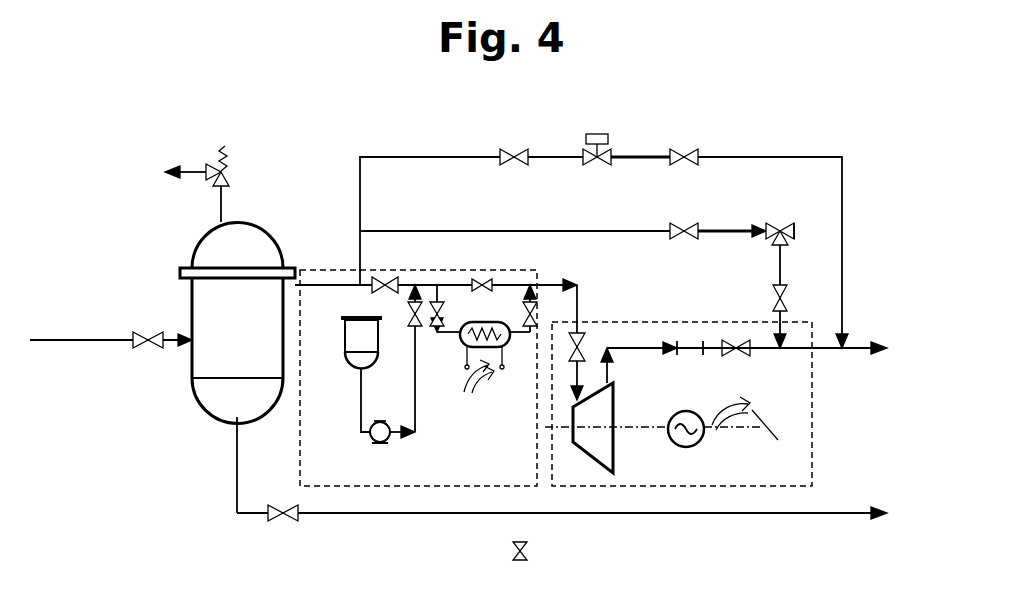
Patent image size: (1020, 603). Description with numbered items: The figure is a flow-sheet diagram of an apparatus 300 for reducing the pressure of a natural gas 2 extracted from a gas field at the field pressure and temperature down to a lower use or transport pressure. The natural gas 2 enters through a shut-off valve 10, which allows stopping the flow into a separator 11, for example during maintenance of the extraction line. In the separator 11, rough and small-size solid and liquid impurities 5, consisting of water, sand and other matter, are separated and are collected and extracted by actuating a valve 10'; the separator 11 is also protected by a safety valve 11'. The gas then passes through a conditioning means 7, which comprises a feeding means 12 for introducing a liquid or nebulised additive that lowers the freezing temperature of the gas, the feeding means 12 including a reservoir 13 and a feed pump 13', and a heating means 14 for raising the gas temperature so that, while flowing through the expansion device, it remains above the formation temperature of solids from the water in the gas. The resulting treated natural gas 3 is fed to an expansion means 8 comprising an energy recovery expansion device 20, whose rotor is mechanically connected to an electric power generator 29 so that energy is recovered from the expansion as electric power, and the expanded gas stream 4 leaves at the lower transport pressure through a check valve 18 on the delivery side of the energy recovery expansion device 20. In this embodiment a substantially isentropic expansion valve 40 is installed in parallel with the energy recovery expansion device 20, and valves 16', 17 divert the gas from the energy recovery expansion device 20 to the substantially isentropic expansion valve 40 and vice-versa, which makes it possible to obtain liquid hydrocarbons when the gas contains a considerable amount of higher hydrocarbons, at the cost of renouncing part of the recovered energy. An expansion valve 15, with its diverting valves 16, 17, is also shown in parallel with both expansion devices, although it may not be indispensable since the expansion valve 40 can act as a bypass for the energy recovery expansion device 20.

The apparatus 300 is at (110, 235).
The natural gas 2 is at (62, 342).
The treated natural gas 3 is at (400, 157).
The expanded gas stream 4 is at (857, 348).
The solid and liquid impurities 5 is at (812, 513).
The conditioning means 7 is at (338, 268).
The expansion means 8 is at (690, 321).
The shut-off valve 10 is at (145, 367).
The valve 10' is at (254, 536).
The separator 11 is at (210, 349).
The safety valve 11' is at (224, 153).
The feeding means 12 is at (353, 405).
The reservoir 13 is at (342, 335).
The feed pump 13' is at (399, 447).
The heating means 14 is at (458, 366).
The expansion valve 15 is at (784, 229).
The valve 16 is at (753, 269).
The valve 16' is at (627, 121).
The valve 17 is at (386, 284).
The check valve 18 is at (692, 343).
The energy recovery expansion device 20 is at (614, 441).
The electric power generator 29 is at (700, 444).
The substantially isentropic expansion valve 40 is at (603, 134).